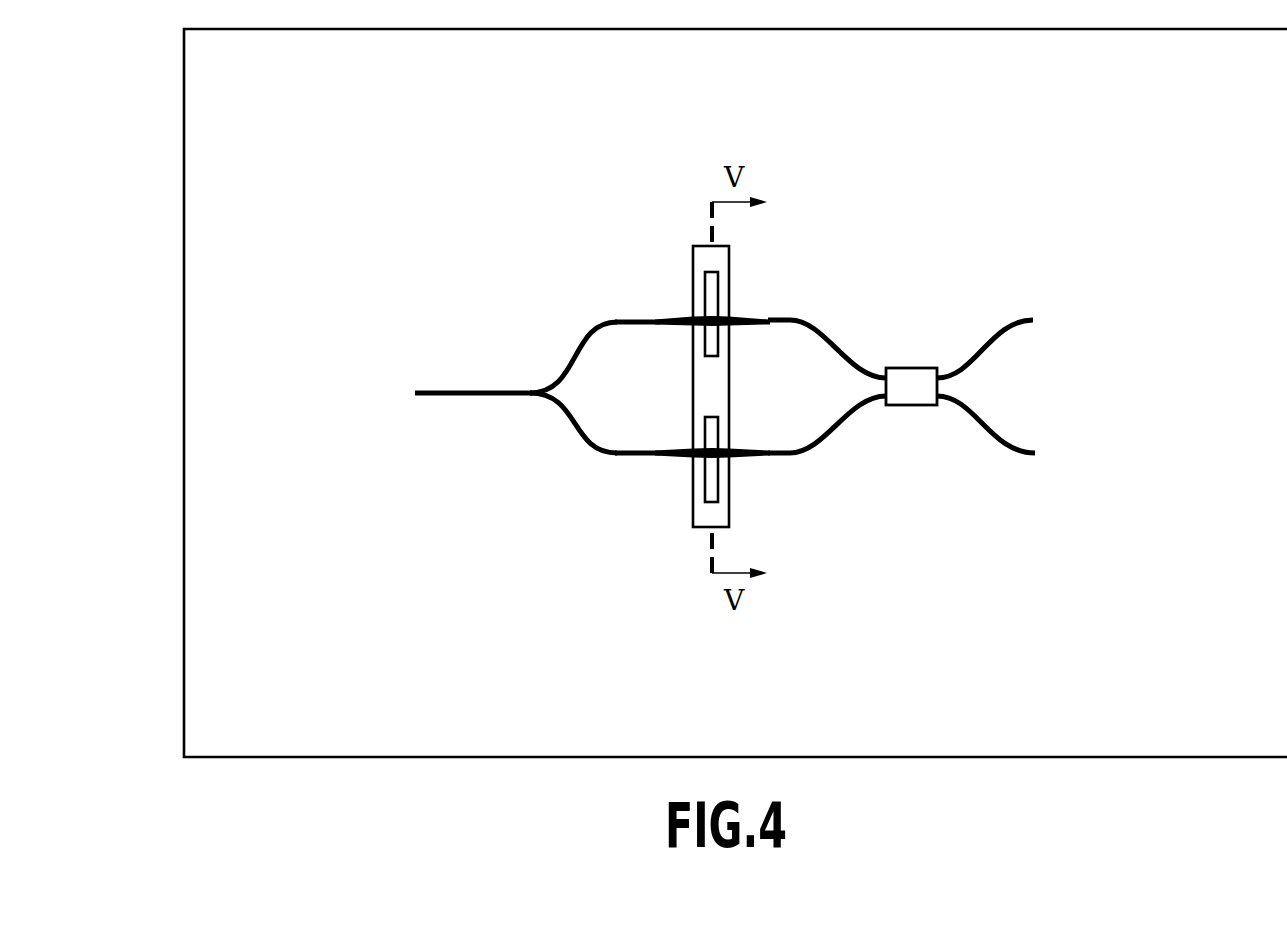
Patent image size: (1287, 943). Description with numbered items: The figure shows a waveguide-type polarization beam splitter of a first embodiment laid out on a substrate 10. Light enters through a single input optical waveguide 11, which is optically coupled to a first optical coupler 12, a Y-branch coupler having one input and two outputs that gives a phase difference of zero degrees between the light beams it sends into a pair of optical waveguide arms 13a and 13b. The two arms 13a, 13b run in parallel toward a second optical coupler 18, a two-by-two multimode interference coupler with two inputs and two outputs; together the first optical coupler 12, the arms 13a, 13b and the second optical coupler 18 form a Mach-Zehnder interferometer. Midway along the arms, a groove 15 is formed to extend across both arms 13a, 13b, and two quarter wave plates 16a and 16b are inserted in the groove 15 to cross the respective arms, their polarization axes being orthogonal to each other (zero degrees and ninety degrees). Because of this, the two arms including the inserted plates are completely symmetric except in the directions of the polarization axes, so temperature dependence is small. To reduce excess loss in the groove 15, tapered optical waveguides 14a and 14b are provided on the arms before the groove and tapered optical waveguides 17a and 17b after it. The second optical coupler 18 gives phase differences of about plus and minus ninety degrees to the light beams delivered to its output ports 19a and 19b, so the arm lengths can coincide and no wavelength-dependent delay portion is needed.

The substrate 10 is at (255, 759).
The input optical waveguide 11 is at (377, 392).
The first optical coupler 12 is at (493, 396).
The optical waveguide arm 13a is at (575, 353).
The optical waveguide arm 13b is at (597, 456).
The tapered optical waveguide 14a is at (664, 313).
The tapered optical waveguide 14b is at (677, 458).
The groove 15 is at (695, 531).
The quarter wave plate 16a is at (703, 293).
The quarter wave plate 16b is at (718, 495).
The tapered optical waveguide 17a is at (756, 314).
The tapered optical waveguide 17b is at (748, 459).
The second optical coupler 18 is at (910, 406).
The output port 19a is at (1095, 343).
The output port 19b is at (1016, 432).